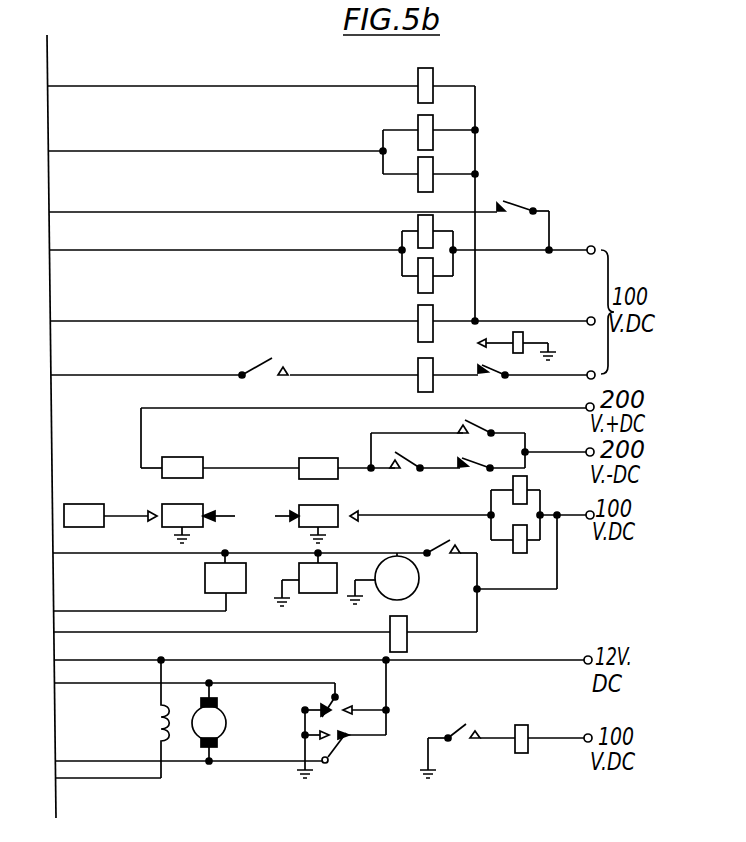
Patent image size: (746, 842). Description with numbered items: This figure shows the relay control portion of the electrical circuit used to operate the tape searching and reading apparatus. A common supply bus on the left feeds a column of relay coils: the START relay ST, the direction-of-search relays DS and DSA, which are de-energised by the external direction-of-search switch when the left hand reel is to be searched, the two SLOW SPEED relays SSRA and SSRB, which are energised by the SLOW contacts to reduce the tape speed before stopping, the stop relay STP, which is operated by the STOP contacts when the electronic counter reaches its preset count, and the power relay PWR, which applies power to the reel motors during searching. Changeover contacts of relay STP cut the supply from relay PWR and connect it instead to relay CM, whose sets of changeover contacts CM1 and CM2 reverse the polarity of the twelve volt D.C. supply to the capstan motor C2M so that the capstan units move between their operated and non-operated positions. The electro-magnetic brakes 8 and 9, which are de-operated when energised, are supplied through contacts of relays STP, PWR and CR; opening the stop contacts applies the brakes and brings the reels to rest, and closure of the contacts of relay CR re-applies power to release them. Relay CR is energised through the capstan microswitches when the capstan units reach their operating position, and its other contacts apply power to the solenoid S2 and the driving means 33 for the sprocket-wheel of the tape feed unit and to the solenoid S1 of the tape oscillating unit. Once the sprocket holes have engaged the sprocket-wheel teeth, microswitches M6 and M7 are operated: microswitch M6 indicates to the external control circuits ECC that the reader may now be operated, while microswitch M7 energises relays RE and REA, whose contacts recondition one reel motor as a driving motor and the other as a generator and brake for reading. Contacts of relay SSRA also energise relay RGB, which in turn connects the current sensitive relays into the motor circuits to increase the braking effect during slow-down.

The START relay ST is at (441, 88).
The direction of search relay DS is at (440, 128).
The direction of search auxiliary relay DSA is at (443, 170).
The SLOW SPEED relay SSRA is at (385, 244).
The SLOW SPEED relay SSRB is at (384, 273).
The stop relay STP is at (400, 319).
The capstan motor relay CM is at (517, 340).
The power relay PWR is at (394, 369).
The electro-magnetic brake 8 is at (182, 469).
The electro-magnetic brake 9 is at (318, 470).
The reading relay RE is at (530, 502).
The reading auxiliary relay REA is at (522, 554).
The external control circuits ECC is at (110, 516).
The microswitch M6 is at (188, 522).
The microswitch M7 is at (324, 522).
The solenoid S1 is at (225, 582).
The solenoid S2 is at (305, 579).
The driving means 33 is at (383, 578).
The capstan relay CR is at (414, 638).
The capstan motor C2M is at (227, 722).
The changeover contacts CM1 is at (345, 697).
The changeover contacts CM2 is at (344, 744).
The relay RGB is at (538, 754).